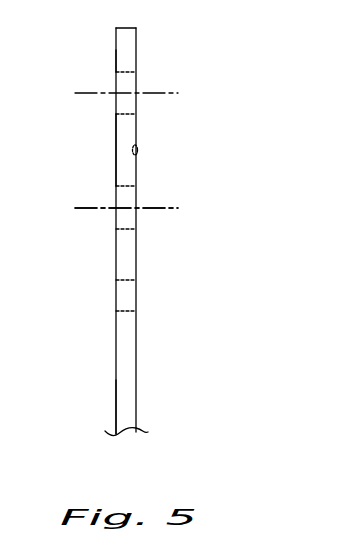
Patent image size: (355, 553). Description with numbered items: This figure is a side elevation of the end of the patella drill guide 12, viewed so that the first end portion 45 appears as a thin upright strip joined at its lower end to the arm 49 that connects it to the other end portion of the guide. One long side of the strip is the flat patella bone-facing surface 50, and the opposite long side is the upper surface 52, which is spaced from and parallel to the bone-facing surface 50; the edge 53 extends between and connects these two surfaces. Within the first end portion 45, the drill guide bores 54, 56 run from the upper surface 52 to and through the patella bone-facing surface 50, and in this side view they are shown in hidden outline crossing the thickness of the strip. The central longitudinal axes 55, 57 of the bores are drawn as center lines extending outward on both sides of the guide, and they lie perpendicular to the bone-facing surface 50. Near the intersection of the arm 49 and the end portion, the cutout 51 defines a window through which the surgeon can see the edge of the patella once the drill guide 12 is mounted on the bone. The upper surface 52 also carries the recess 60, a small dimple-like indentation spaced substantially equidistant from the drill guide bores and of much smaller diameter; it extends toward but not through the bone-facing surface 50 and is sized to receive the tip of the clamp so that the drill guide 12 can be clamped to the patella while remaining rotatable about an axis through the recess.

The patella drill guide 12 is at (116, 368).
The first end portion 45 is at (116, 42).
The arm 49 is at (123, 399).
The patella bone-facing surface 50 is at (136, 57).
The cutout 51 is at (131, 292).
The upper surface 52 is at (116, 55).
The edge 53 is at (122, 165).
The drill guide bore 54 is at (131, 85).
The central longitudinal axis 55 is at (92, 93).
The drill guide bore 56 is at (131, 194).
The central longitudinal axis 57 is at (92, 208).
The recess 60 is at (139, 150).